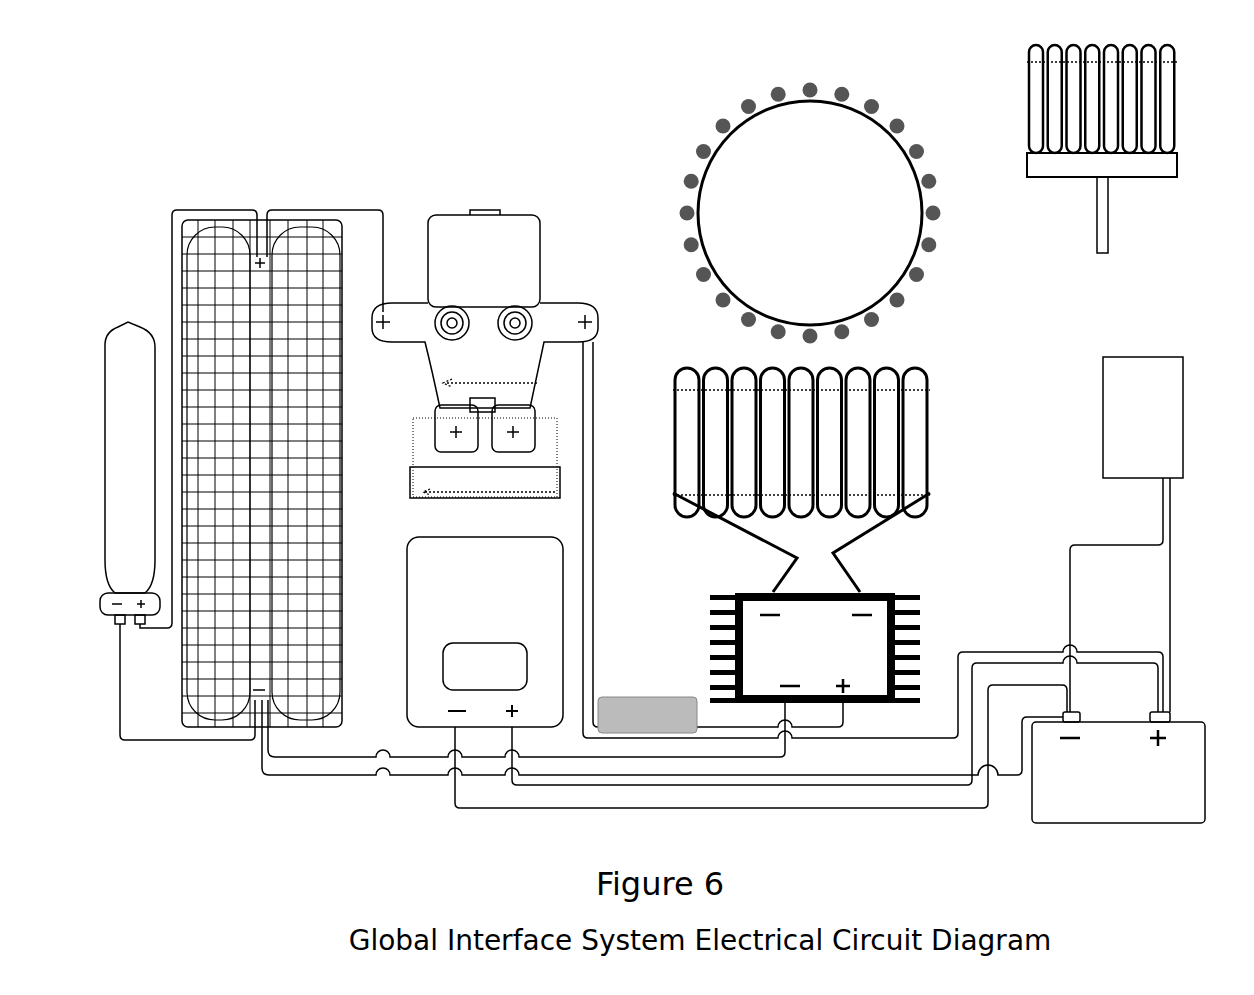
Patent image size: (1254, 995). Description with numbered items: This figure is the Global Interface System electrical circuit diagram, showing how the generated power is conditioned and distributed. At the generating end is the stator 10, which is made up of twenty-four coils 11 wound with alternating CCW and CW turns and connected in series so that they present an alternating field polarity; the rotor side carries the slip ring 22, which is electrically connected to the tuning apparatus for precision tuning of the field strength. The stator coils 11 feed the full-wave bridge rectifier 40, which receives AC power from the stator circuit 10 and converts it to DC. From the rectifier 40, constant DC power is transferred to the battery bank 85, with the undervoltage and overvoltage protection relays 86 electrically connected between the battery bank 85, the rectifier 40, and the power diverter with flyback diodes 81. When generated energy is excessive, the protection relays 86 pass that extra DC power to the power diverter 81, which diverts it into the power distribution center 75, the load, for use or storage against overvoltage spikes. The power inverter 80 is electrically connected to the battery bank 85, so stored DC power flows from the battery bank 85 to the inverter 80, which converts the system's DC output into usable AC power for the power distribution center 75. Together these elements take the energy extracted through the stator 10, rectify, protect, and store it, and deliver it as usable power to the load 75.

The stator 10 is at (930, 383).
The coils 11 is at (700, 158).
The slip ring 22 is at (1090, 240).
The full-wave bridge rectifier 40 is at (920, 615).
The power distribution center 75 is at (120, 325).
The power inverter 80 is at (1185, 472).
The power diverter with flyback diodes 81 is at (540, 215).
The battery bank 85 is at (1205, 755).
The undervoltage and overvoltage protection relays 86 is at (407, 607).